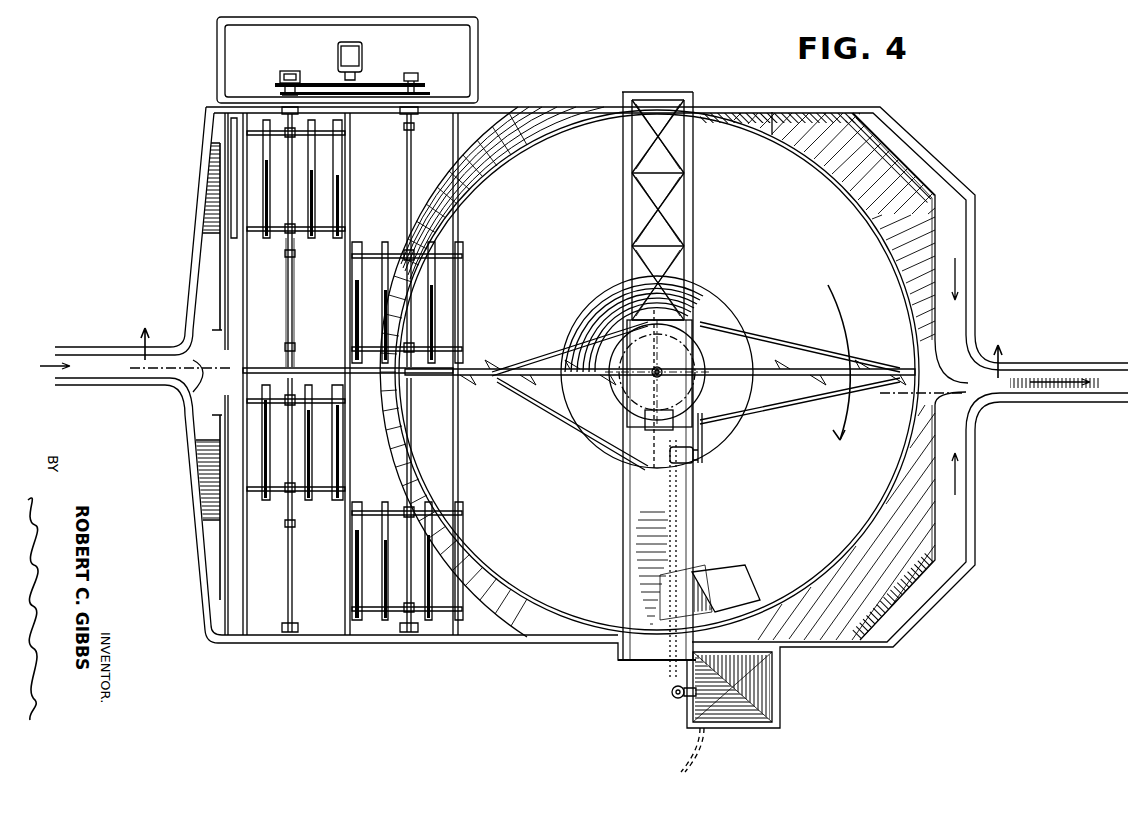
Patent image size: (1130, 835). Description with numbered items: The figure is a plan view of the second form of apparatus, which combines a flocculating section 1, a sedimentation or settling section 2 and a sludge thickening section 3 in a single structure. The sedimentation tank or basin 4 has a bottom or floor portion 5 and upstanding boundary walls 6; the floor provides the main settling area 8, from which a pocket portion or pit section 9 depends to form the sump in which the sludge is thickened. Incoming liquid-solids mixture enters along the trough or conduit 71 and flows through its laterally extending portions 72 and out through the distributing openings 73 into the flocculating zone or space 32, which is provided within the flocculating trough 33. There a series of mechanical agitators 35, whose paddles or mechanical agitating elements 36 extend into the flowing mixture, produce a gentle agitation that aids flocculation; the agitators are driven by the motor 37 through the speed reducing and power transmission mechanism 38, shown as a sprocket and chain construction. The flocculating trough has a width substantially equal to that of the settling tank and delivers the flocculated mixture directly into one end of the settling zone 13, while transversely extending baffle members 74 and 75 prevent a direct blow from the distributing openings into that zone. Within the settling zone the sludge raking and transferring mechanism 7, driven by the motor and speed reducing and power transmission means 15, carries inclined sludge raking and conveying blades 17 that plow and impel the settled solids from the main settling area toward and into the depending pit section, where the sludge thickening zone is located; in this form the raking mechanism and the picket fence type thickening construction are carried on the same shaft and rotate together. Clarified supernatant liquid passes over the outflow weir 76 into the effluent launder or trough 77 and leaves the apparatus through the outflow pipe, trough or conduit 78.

The flocculating section 1 is at (348, 374).
The sedimentation or settling section 2 is at (657, 372).
The sludge thickening section 3 is at (657, 372).
The sedimentation tank or basin 4 is at (814, 356).
The bottom or floor portion 5 is at (571, 343).
The upstanding boundary walls 6 is at (735, 107).
The sludge raking and transferring mechanism 7 is at (492, 372).
The main settling area 8 is at (592, 300).
The pocket portion or pit section 9 is at (715, 410).
The settling zone 13 is at (660, 558).
The motor and speed reducing and power transmission means 15 is at (702, 462).
The sludge raking and conveying blades 17 is at (870, 365).
The flocculating zone or space 32 is at (352, 540).
The flocculating trough 33 is at (310, 632).
The mechanical agitators 35 is at (347, 204).
The mechanical agitating elements 36 is at (292, 300).
The motor 37 is at (362, 57).
The speed reducing and power transmission mechanism 38 is at (278, 83).
The trough or conduit 71 is at (114, 378).
The laterally extending portions 72 is at (210, 210).
The distributing openings 73 is at (222, 233).
The transversely extending baffle member 74 is at (333, 442).
The transversely extending baffle member 75 is at (458, 467).
The outflow weir 76 is at (930, 178).
The effluent launder or trough 77 is at (962, 272).
The outflow pipe, trough or conduit 78 is at (1020, 378).